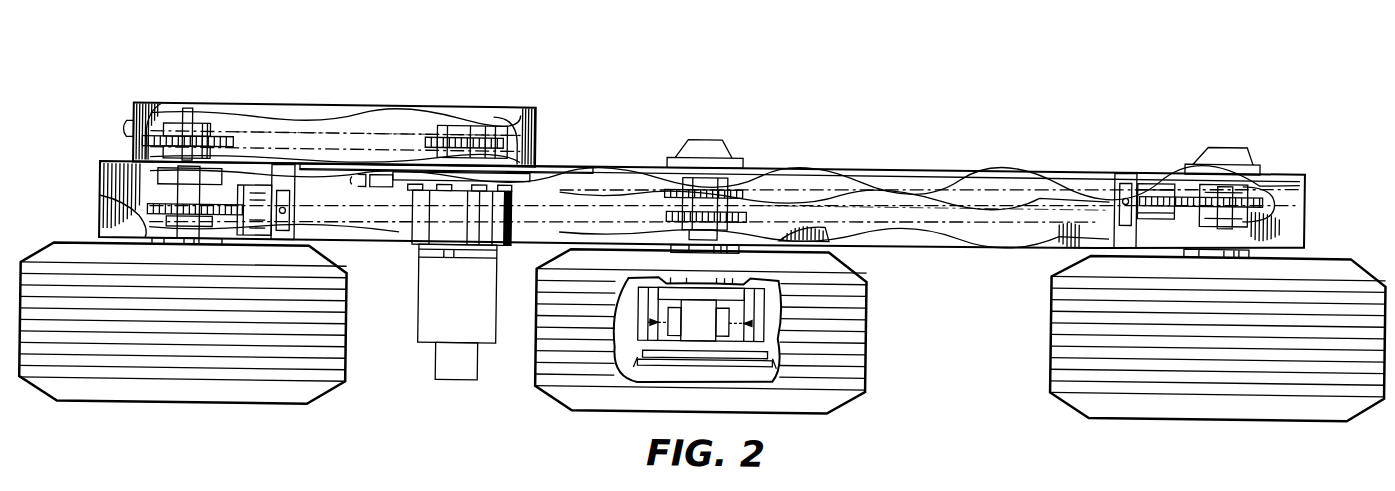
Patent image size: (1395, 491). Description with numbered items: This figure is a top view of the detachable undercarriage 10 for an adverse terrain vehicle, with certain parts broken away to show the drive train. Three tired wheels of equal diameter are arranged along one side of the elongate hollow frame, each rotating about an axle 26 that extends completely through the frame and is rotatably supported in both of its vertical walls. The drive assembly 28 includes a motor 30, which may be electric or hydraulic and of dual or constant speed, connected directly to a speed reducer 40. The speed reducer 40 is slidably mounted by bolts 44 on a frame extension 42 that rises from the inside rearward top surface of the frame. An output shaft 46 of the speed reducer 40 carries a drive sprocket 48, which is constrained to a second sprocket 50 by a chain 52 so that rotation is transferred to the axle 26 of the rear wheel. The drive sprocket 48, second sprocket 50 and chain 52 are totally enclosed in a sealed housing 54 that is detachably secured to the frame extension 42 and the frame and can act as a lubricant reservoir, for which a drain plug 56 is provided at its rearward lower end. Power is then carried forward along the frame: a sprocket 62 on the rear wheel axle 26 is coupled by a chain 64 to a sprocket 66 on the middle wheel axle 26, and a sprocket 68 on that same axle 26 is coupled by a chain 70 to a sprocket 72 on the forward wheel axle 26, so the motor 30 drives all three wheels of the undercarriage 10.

The undercarriage 10 is at (890, 56).
The axle 26 is at (178, 239).
The drive assembly 28 is at (330, 92).
The motor 30 is at (450, 307).
The speed reducer 40 is at (447, 222).
The frame extension 42 is at (588, 160).
The bolts 44 is at (512, 190).
The output shaft 46 is at (450, 121).
The drive sprocket 48 is at (455, 133).
The second sprocket 50 is at (225, 135).
The chain 52 is at (302, 132).
The sealed housing 54 is at (372, 102).
The drain plug 56 is at (128, 126).
The sprocket 62 is at (150, 205).
The chain 64 is at (378, 208).
The sprocket 66 is at (748, 203).
The sprocket 68 is at (745, 183).
The chain 70 is at (982, 178).
The sprocket 72 is at (1300, 189).